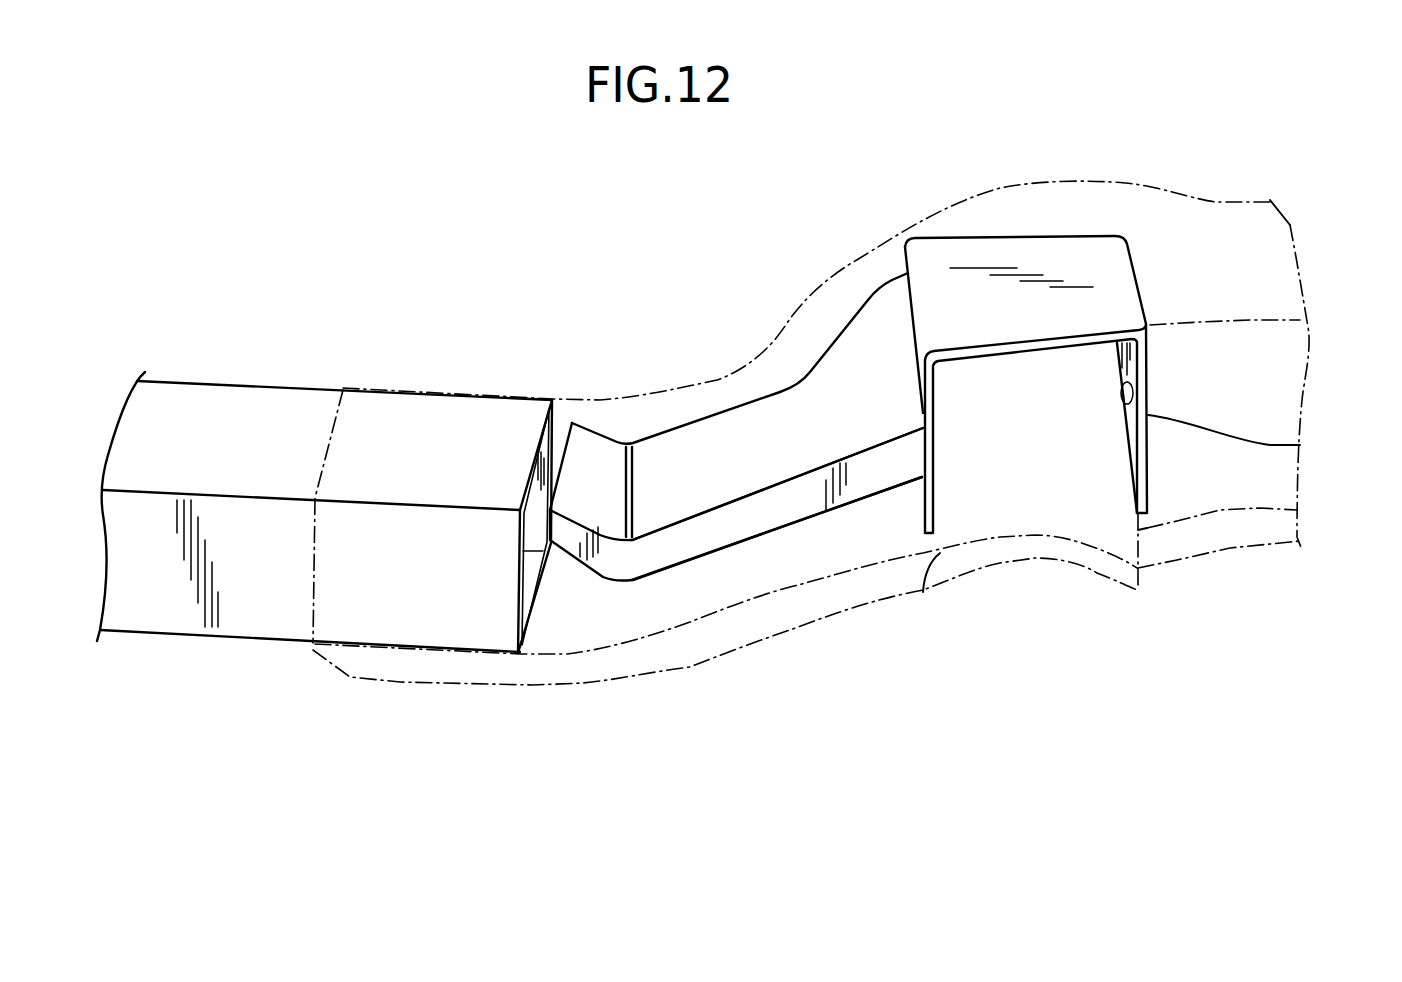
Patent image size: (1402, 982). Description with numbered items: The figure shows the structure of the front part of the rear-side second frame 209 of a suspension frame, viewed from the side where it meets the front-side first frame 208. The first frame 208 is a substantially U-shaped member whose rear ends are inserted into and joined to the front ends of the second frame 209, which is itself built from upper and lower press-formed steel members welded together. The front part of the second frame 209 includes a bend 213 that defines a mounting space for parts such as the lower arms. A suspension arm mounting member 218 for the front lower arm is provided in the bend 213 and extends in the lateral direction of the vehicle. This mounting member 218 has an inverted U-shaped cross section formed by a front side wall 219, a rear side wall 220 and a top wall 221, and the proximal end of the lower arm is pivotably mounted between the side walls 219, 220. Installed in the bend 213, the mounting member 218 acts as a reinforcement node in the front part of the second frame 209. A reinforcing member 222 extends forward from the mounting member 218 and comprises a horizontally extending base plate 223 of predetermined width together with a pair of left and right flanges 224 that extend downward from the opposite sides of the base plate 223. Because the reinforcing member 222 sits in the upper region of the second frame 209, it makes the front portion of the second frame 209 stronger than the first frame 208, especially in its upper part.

The first frame 208 is at (233, 378).
The second frame 209 is at (698, 678).
The bend 213 is at (834, 278).
The suspension arm mounting member 218 is at (1118, 212).
The front side wall 219 is at (935, 481).
The rear side wall 220 is at (1300, 445).
The top wall 221 is at (950, 252).
The reinforcing member 222 is at (743, 400).
The base plate 223 is at (648, 457).
The flange 224 is at (773, 527).